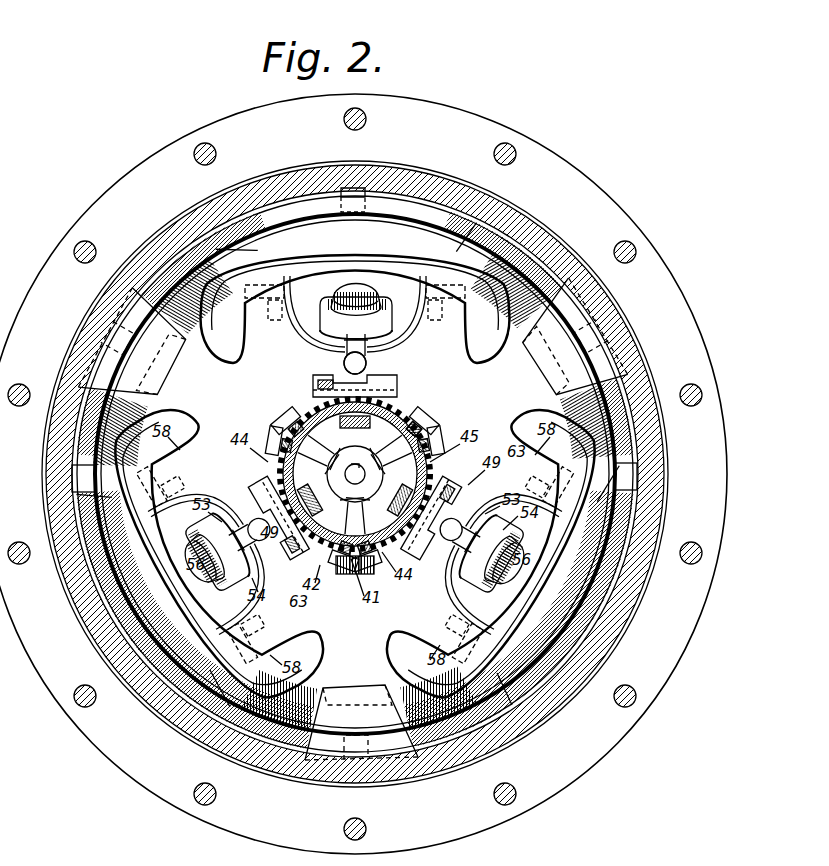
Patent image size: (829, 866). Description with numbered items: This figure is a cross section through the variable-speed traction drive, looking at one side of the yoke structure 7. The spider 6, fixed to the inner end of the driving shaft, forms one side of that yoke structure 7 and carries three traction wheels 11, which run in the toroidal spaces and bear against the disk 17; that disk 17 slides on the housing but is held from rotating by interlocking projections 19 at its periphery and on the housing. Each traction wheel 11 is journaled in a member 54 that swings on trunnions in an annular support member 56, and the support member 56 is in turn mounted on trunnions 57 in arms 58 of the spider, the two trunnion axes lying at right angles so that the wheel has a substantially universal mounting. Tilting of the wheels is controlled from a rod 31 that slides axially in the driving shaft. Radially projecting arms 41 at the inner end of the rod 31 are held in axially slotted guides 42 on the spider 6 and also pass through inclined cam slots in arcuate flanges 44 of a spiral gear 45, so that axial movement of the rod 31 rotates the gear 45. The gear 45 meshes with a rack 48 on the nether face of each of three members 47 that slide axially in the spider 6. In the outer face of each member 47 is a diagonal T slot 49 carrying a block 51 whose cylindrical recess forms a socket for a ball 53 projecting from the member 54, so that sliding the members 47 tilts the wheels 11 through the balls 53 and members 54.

The spider 6 is at (371, 578).
The yoke structure 7 is at (480, 115).
The traction wheels 11 is at (183, 758).
The second disk 17 is at (522, 268).
The interlocking projections 19 is at (637, 478).
The rod 31 is at (357, 470).
The radially projecting arms 41 is at (274, 422).
The axially slotted guides 42 is at (282, 412).
The arcuate flanges 44 is at (428, 404).
The spiral gear 45 is at (318, 386).
The members 47 is at (398, 384).
The rack 48 is at (268, 490).
The diagonal T slot 49 is at (353, 373).
The block 51 is at (340, 366).
The ball 53 is at (382, 336).
The members 54 is at (356, 318).
The annular support member 56 is at (356, 290).
The trunnions 57 is at (185, 478).
The arms 58 is at (246, 327).